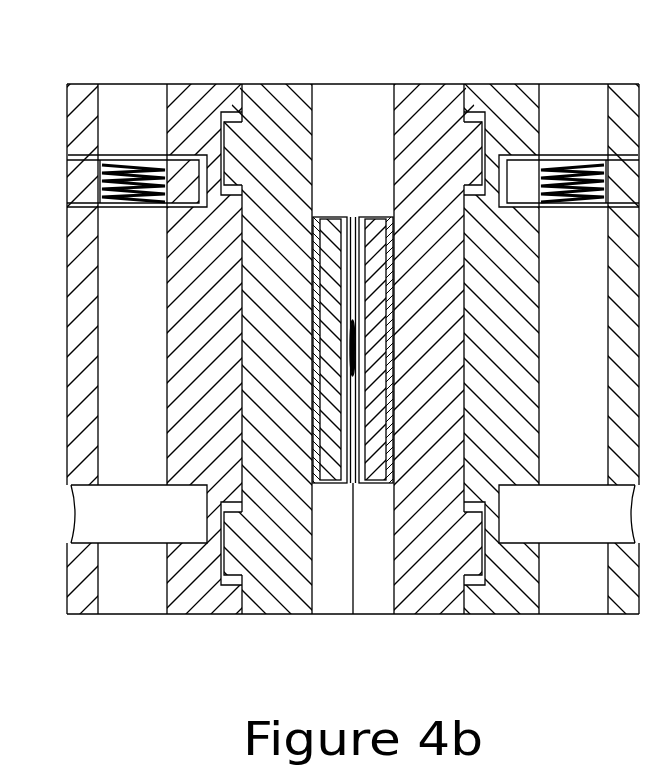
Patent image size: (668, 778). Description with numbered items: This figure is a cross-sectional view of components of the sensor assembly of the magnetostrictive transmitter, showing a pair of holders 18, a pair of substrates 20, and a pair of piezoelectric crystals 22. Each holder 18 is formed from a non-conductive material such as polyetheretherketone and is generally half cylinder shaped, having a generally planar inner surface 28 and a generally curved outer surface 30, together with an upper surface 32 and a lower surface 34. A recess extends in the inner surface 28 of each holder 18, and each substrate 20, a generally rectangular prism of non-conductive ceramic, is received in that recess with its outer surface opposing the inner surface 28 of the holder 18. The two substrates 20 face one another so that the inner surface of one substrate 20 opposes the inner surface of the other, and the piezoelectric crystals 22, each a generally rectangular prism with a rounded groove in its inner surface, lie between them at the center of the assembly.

The holder 18 is at (80, 83).
The substrate 20 is at (273, 83).
The piezoelectric crystal 22 is at (333, 217).
The inner surface 28 is at (242, 470).
The outer surface 30 is at (65, 587).
The upper surface 32 is at (198, 82).
The lower surface 34 is at (197, 614).